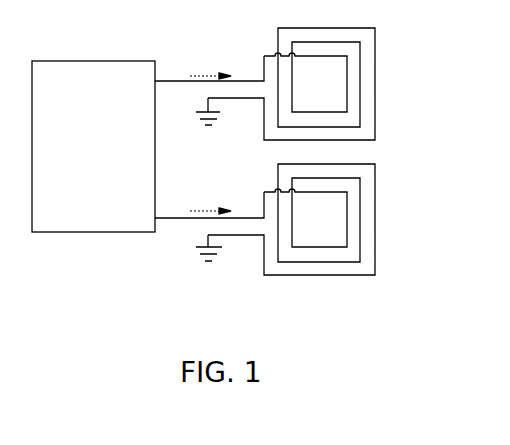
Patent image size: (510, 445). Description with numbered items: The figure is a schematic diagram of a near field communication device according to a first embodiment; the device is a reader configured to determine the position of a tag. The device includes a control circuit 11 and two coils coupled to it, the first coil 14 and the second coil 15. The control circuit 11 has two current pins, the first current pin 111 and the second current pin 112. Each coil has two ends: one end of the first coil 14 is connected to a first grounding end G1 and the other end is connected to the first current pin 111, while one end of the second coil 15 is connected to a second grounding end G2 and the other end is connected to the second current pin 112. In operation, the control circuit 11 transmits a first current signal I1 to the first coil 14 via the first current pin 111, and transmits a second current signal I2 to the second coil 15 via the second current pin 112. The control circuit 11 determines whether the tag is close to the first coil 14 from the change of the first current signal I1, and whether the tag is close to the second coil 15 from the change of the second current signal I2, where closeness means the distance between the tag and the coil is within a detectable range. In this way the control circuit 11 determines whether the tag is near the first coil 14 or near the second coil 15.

The control circuit 11 is at (96, 60).
The first current pin 111 is at (178, 80).
The second current pin 112 is at (160, 221).
The first coil 14 is at (376, 82).
The second coil 15 is at (376, 217).
The first grounding end G1 is at (208, 128).
The second grounding end G2 is at (208, 263).
The first current signal I1 is at (210, 65).
The second current signal I2 is at (210, 200).